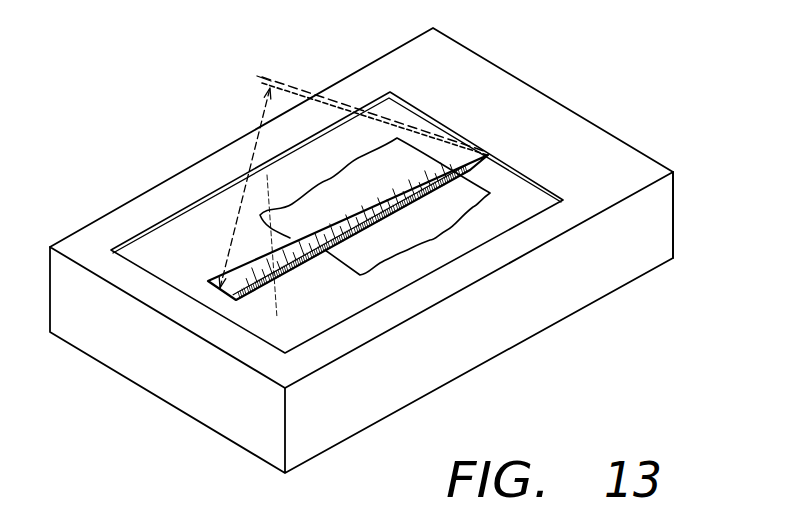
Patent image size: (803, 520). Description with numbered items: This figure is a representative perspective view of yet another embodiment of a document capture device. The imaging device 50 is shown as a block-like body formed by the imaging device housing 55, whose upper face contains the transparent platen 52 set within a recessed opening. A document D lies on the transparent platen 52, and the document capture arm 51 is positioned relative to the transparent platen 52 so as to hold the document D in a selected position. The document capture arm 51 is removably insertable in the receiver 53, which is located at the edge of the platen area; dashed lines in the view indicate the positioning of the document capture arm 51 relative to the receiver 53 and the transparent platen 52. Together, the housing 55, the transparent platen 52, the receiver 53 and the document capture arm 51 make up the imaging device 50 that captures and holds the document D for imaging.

The imaging device 50 is at (611, 45).
The document capture arm 51 is at (299, 89).
The transparent platen 52 is at (185, 222).
The receiver 53 is at (488, 154).
The imaging device housing 55 is at (673, 210).
The document D is at (344, 263).